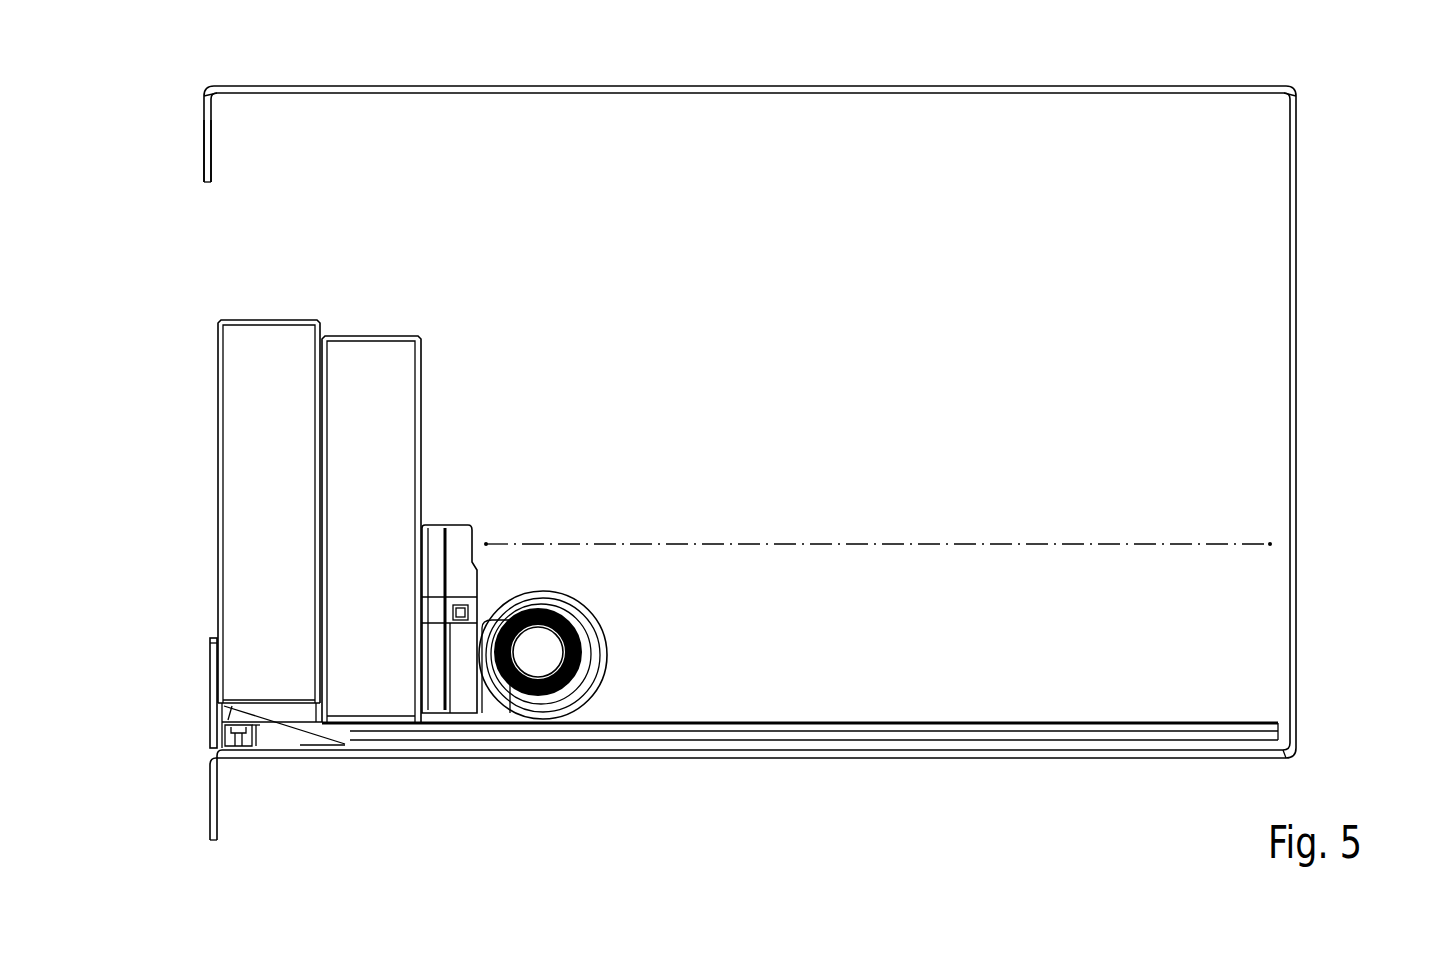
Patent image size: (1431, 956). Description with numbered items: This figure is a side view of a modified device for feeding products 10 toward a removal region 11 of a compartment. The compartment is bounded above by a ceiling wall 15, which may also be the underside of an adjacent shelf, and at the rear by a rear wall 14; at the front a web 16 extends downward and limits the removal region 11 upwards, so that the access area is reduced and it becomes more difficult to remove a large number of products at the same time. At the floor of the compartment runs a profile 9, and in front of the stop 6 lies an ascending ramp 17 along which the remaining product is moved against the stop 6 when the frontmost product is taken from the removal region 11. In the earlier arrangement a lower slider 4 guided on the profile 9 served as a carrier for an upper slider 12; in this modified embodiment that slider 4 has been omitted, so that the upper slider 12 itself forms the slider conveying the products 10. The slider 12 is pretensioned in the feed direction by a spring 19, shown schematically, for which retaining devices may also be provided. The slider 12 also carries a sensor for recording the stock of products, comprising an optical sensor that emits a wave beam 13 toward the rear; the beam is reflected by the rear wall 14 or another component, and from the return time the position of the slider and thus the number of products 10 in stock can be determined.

The slider 4 is at (903, 146).
The stop 6 is at (210, 660).
The profile 9 is at (513, 739).
The products 10 is at (387, 372).
The removal region 11 is at (200, 263).
The upper slider 12 is at (462, 540).
The wave beam 13 is at (866, 543).
The rear wall 14 is at (1298, 388).
The ceiling wall 15 is at (500, 93).
The web 16 is at (212, 152).
The ascending ramp 17 is at (284, 733).
The spring 19 is at (578, 665).